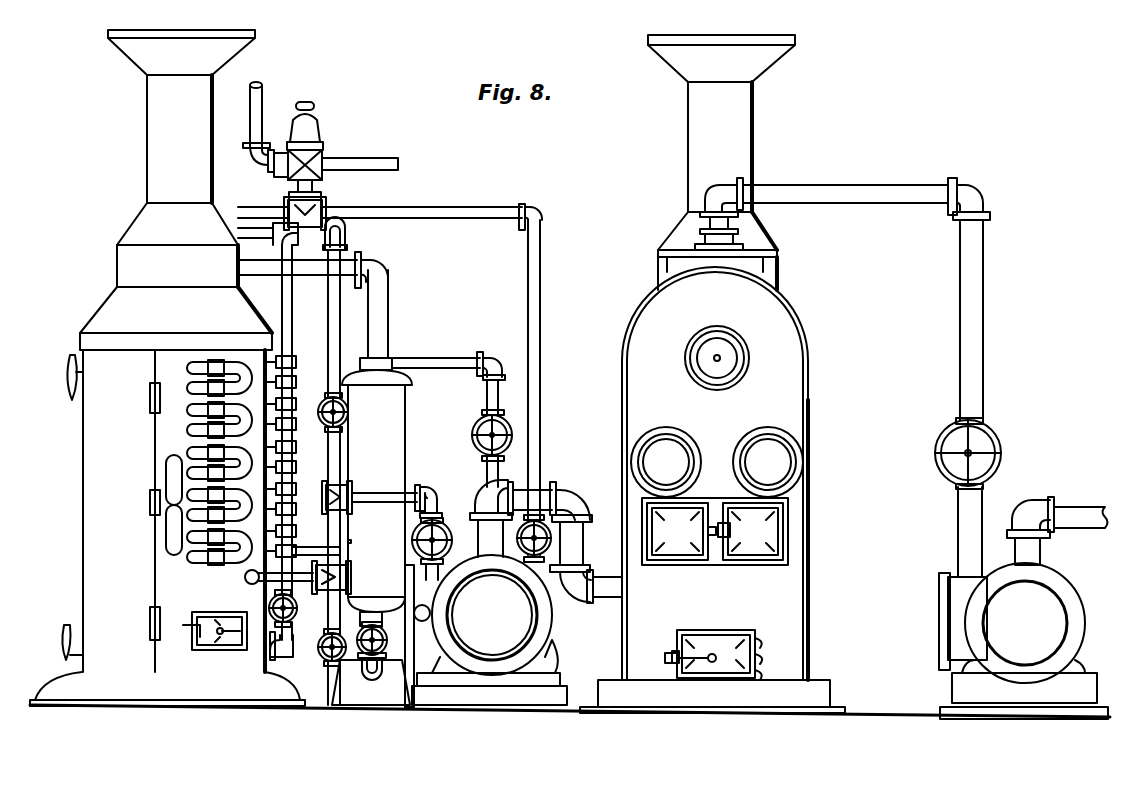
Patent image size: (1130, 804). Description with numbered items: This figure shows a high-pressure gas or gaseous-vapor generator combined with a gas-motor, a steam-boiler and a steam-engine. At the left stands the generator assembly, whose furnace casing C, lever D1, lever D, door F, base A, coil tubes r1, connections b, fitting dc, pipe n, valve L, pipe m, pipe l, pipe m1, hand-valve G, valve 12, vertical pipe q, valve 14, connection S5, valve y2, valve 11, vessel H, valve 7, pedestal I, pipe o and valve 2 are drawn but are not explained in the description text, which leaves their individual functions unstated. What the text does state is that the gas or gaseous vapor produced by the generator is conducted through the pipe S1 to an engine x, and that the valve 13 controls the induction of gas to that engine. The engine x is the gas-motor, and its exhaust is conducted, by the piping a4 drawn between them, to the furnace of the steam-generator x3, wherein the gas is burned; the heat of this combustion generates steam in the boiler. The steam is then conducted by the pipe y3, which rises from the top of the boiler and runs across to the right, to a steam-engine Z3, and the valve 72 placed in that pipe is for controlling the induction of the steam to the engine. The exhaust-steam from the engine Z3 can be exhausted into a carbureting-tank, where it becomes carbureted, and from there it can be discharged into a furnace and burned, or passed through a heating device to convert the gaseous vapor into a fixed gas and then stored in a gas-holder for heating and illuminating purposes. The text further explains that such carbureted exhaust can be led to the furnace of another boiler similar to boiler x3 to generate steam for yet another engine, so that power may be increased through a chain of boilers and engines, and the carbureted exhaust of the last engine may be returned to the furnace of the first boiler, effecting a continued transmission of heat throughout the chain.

The furnace or heater casing C is at (176, 351).
The upper damper lever D1 is at (48, 377).
The lower damper lever D is at (48, 642).
The furnace fire door F is at (215, 646).
The furnace base A is at (167, 689).
The heating coil tubes r1 is at (213, 462).
The coil header connections b is at (271, 456).
The drain connection dc is at (258, 578).
The vent pipe n is at (255, 129).
The regulating valve L is at (313, 166).
The supply pipe m is at (360, 154).
The main gas pipe l is at (395, 371).
The branch pipe m1 is at (289, 441).
The hand valve G is at (264, 608).
The valve 12 is at (300, 606).
The vertical pipe q is at (338, 461).
The valve 14 is at (348, 412).
The pipe S1 is at (382, 499).
The gas connection S5 is at (359, 533).
The valve y2 is at (344, 577).
The valve 11 is at (322, 647).
The receiver or generator vessel H is at (325, 439).
The valve 7 is at (379, 650).
The support pedestal I is at (373, 636).
The connecting pipe o is at (452, 446).
The valve 2 is at (494, 430).
The valve 13 is at (439, 539).
The pipe connection to boiler a4 is at (547, 542).
The engine x is at (489, 630).
The steam-generator x3 is at (720, 374).
The pipe y3 is at (842, 377).
The valve 72 is at (985, 453).
The steam-engine Z3 is at (1023, 608).